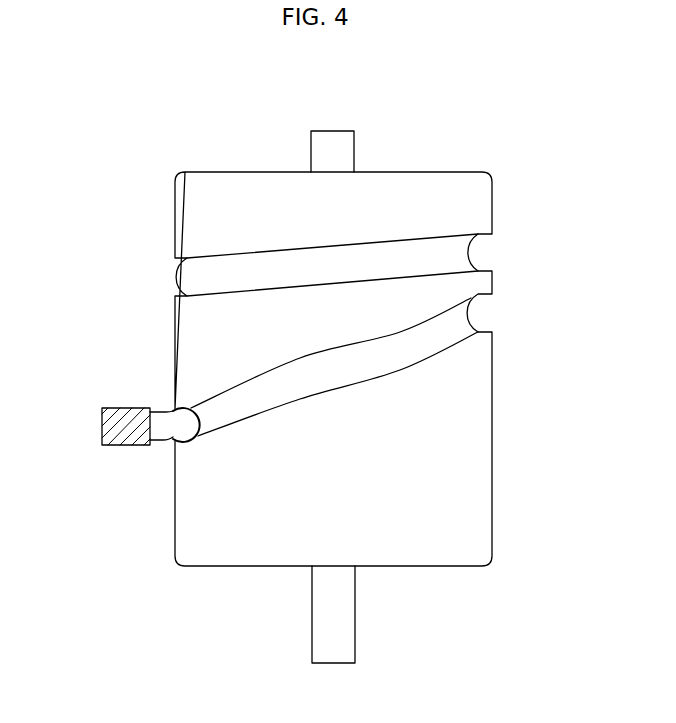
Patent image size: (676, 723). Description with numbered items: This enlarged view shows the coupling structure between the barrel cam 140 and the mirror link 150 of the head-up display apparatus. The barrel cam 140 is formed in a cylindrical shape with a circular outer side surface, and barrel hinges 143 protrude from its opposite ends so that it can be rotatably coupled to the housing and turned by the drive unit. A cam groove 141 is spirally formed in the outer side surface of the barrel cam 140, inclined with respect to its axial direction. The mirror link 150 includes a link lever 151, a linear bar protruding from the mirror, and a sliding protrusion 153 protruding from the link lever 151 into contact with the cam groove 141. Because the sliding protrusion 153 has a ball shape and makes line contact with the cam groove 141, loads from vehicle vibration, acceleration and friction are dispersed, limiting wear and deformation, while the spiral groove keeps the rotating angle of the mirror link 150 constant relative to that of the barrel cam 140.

The barrel cam 140 is at (175, 203).
The cam groove 141 is at (472, 253).
The barrel hinge 143 is at (333, 138).
The mirror link 150 is at (13, 345).
The link lever 151 is at (102, 412).
The sliding protrusion 153 is at (178, 422).